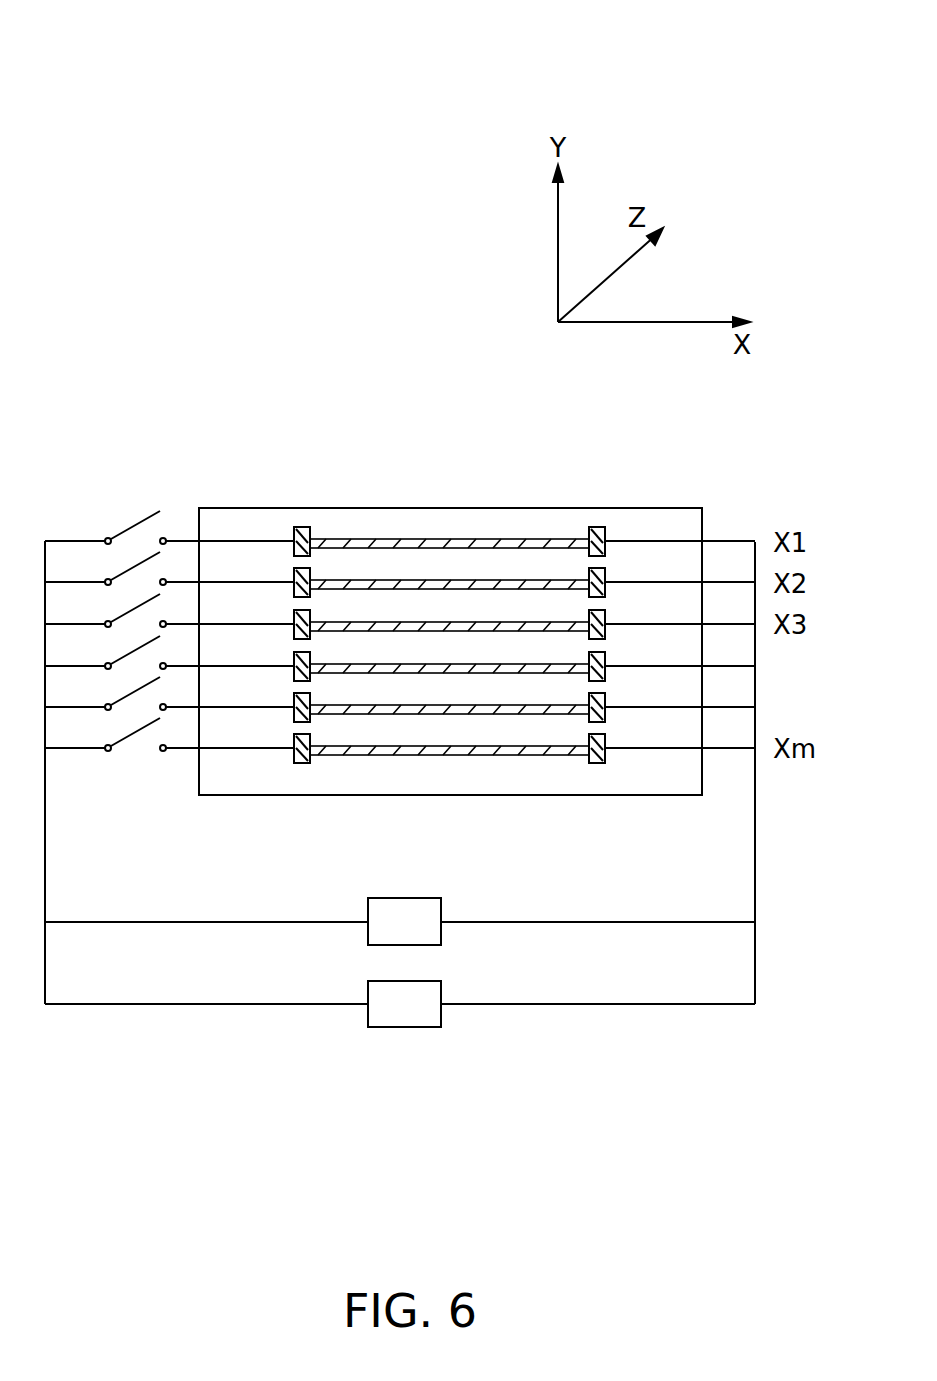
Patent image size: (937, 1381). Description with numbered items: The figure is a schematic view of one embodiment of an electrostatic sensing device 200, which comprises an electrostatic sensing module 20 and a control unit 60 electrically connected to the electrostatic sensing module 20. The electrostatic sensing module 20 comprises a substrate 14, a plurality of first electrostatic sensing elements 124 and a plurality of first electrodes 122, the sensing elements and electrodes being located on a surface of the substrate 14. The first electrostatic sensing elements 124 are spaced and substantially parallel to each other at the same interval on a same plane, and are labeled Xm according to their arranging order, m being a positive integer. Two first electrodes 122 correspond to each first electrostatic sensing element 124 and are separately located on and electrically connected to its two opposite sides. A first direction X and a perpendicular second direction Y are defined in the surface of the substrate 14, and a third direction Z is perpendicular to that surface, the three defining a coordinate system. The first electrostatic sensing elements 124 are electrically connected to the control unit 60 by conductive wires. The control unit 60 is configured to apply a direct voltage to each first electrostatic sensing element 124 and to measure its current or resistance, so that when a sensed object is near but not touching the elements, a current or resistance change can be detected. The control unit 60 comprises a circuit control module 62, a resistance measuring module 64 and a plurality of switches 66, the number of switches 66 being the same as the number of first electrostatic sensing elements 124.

The electrostatic sensing device 200 is at (232, 92).
The substrate 14 is at (240, 517).
The switches 66 is at (133, 522).
The electrostatic sensing module 20 is at (340, 440).
The first electrodes 122 is at (303, 527).
The first electrostatic sensing elements 124 is at (430, 543).
The control unit 60 is at (543, 1122).
The circuit control module 62 is at (428, 908).
The resistance measuring module 64 is at (402, 1017).